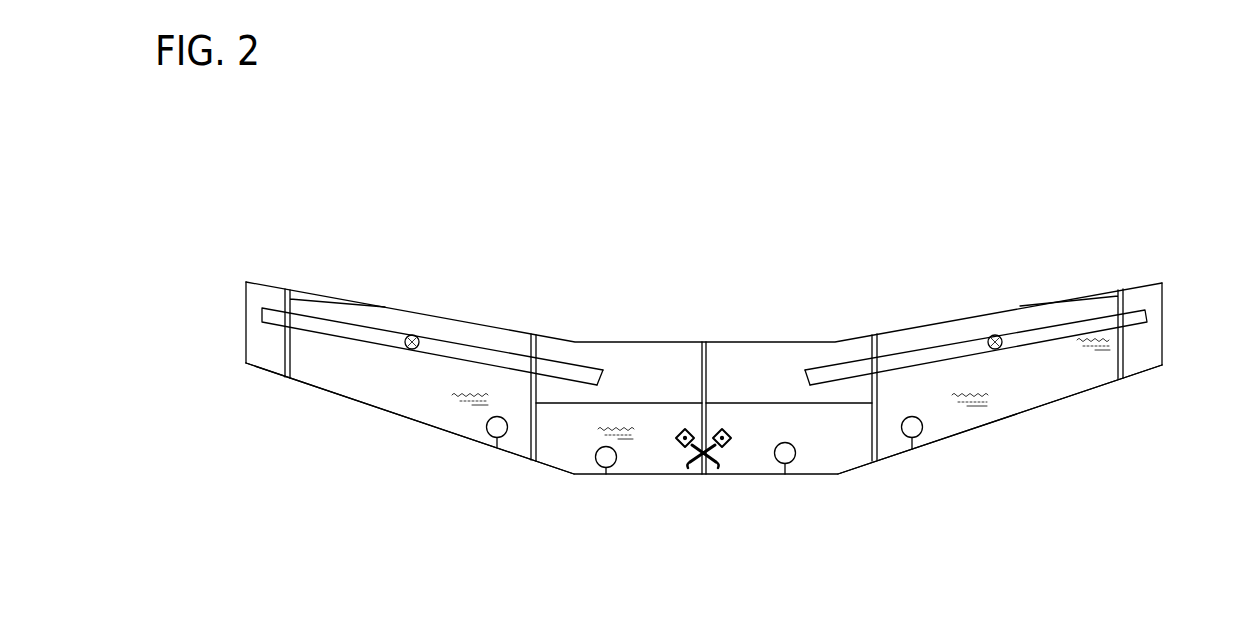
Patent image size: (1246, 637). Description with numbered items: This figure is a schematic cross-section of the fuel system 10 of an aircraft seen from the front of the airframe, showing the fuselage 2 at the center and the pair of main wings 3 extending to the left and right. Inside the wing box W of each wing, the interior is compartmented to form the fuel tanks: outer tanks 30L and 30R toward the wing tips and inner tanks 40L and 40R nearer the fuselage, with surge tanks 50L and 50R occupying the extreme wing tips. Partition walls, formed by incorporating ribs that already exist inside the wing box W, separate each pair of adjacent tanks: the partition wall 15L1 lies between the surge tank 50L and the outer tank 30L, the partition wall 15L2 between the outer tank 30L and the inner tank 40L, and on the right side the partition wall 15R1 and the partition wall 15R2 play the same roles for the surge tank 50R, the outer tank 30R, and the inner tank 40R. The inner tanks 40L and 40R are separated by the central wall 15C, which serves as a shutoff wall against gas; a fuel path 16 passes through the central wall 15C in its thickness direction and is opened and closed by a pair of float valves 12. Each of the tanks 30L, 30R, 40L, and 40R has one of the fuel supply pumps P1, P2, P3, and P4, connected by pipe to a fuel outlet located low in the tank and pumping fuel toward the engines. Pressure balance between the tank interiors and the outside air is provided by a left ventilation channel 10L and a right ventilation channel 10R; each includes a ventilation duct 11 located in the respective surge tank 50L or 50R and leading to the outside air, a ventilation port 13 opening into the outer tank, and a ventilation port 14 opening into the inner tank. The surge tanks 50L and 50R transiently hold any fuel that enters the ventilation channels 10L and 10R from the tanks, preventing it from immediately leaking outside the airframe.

The fuselage 2 is at (805, 328).
The main wing 3 is at (269, 272).
The fuel system 10 is at (860, 487).
The left ventilation channel 10L is at (440, 322).
The right ventilation channel 10R is at (944, 324).
The ventilation duct 11 is at (272, 315).
The float valve 12 is at (684, 428).
The ventilation port 13 is at (412, 350).
The ventilation port 14 is at (603, 378).
The partition wall 15L1 is at (318, 296).
The partition wall 15L2 is at (548, 344).
The central wall 15C is at (708, 367).
The partition wall 15R1 is at (1127, 302).
The partition wall 15R2 is at (885, 344).
The fuel path 16 is at (718, 472).
The outer tank 30L is at (383, 398).
The outer tank 30R is at (965, 426).
The inner tank 40L is at (652, 474).
The inner tank 40R is at (768, 474).
The surge tank 50L is at (270, 360).
The surge tank 50R is at (1140, 365).
The fuel supply pump P1 is at (497, 448).
The fuel supply pump P2 is at (603, 474).
The fuel supply pump P3 is at (790, 474).
The fuel supply pump P4 is at (915, 450).
The wing box W is at (1174, 344).